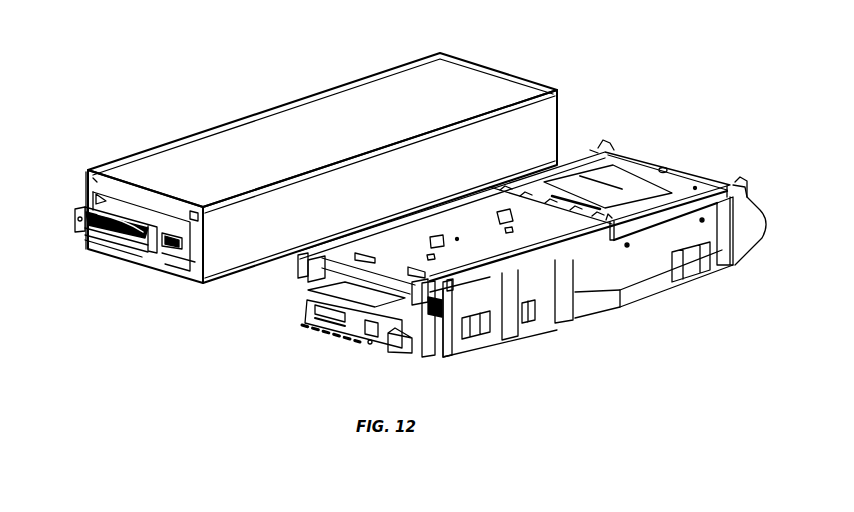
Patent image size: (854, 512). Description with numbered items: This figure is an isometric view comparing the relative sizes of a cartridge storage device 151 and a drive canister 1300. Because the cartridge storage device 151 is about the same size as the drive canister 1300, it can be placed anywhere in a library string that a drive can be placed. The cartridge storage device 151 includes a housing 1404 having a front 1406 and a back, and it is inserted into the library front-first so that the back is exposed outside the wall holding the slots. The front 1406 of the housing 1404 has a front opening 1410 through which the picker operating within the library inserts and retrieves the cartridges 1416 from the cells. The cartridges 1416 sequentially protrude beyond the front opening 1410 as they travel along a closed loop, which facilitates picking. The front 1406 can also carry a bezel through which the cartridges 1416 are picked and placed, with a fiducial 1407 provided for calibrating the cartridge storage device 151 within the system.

The cartridge storage device 151 is at (297, 114).
The housing 1404 is at (180, 133).
The fiducial 1407 is at (203, 200).
The front 1406 is at (97, 184).
The cartridges 1416 is at (75, 222).
The front opening 1410 is at (166, 278).
The drive canister 1300 is at (676, 152).